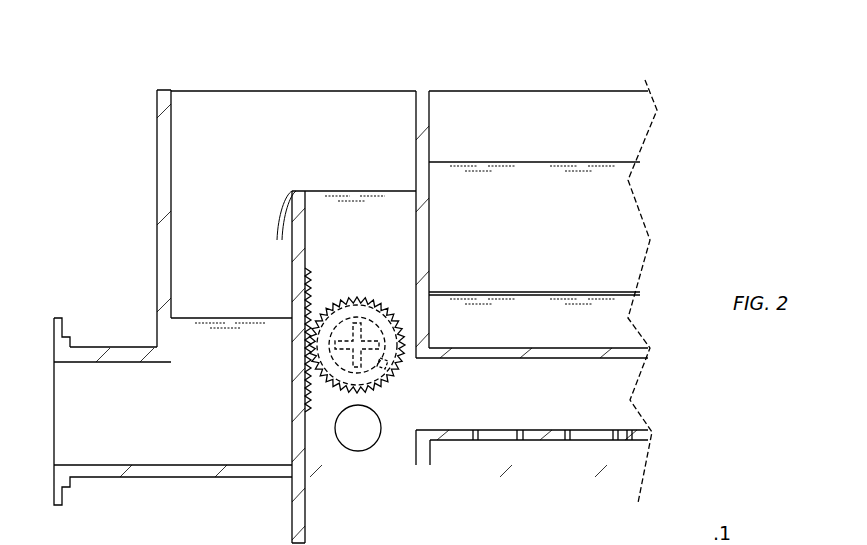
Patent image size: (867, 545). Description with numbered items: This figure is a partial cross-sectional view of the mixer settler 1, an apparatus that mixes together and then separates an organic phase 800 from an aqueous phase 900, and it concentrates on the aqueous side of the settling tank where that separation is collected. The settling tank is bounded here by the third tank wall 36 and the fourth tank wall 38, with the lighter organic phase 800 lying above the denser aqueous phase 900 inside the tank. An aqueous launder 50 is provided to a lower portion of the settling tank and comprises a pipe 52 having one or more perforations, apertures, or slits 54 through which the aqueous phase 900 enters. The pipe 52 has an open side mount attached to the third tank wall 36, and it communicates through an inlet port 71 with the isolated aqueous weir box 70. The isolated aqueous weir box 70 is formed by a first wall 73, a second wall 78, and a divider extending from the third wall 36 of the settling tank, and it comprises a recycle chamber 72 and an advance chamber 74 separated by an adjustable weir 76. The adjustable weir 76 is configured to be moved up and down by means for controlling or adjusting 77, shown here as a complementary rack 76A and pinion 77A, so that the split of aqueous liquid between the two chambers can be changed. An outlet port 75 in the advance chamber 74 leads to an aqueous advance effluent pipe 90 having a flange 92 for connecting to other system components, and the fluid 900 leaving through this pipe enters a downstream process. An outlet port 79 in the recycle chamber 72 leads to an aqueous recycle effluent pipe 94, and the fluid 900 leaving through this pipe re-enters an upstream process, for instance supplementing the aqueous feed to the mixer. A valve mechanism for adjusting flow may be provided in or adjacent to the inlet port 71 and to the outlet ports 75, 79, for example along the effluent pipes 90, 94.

The mixer settler 1 is at (686, 100).
The third tank wall 36 is at (426, 142).
The fourth tank wall 38 is at (587, 91).
The aqueous launder 50 is at (500, 335).
The pipe 52 is at (574, 350).
The slits 54 is at (475, 437).
The isolated aqueous weir box 70 is at (150, 140).
The inlet port 71 is at (435, 406).
The recycle chamber 72 is at (360, 210).
The first wall 73 is at (163, 178).
The advance chamber 74 is at (231, 268).
The outlet port 75 is at (162, 423).
The adjustable weir 76 is at (298, 498).
The rack 76A is at (310, 304).
The means for controlling or adjusting 77 is at (385, 320).
The pinion 77A is at (357, 300).
The second wall 78 is at (262, 91).
The outlet port 79 is at (358, 428).
The aqueous advance effluent pipe 90 is at (113, 352).
The flange 92 is at (62, 320).
The aqueous recycle effluent pipe 94 is at (372, 440).
The organic phase 800 is at (534, 198).
The aqueous phase 900 is at (389, 353).